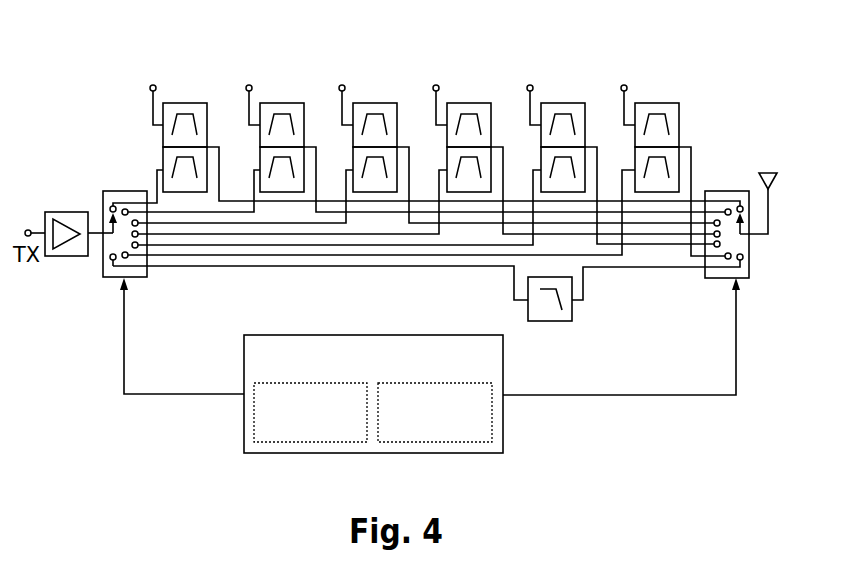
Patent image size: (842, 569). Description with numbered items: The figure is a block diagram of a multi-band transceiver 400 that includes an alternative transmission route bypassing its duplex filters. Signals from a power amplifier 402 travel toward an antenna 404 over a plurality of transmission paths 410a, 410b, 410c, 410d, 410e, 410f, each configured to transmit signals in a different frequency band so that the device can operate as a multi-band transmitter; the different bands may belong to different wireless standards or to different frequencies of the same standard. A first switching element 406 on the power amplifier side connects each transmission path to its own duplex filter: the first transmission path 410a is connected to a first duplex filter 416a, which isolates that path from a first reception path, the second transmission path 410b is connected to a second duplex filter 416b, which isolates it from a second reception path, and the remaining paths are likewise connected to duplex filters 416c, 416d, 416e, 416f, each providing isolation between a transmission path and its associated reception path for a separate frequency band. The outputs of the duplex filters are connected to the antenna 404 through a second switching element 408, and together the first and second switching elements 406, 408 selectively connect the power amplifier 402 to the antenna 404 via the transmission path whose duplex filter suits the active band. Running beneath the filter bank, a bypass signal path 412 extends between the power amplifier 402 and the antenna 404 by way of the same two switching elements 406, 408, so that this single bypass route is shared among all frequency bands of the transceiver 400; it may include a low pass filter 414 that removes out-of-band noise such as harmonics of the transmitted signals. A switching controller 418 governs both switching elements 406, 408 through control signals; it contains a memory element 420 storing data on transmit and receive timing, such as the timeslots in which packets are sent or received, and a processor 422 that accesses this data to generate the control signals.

The multi-band transceiver 400 is at (80, 26).
The power amplifier 402 is at (68, 212).
The antenna 404 is at (768, 173).
The first switching element 406 is at (110, 278).
The second switching element 408 is at (723, 279).
The first transmission path 410a is at (157, 170).
The second transmission path 410b is at (233, 213).
The transmission path 410c is at (219, 224).
The transmission path 410d is at (228, 234).
The transmission path 410e is at (226, 245).
The transmission path 410f is at (222, 257).
The bypass signal path 412 is at (351, 267).
The low pass filter 414 is at (549, 321).
The first duplex filter 416a is at (185, 103).
The second duplex filter 416b is at (282, 103).
The duplex filter 416c is at (375, 103).
The duplex filter 416d is at (469, 103).
The duplex filter 416e is at (563, 103).
The duplex filter 416f is at (657, 103).
The switching controller 418 is at (430, 365).
The memory element 420 is at (310, 412).
The processor 422 is at (435, 412).